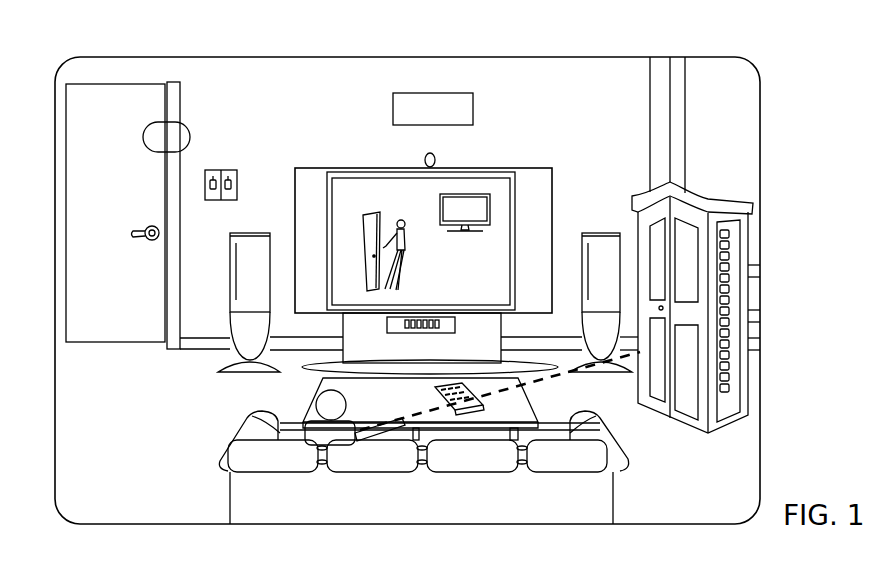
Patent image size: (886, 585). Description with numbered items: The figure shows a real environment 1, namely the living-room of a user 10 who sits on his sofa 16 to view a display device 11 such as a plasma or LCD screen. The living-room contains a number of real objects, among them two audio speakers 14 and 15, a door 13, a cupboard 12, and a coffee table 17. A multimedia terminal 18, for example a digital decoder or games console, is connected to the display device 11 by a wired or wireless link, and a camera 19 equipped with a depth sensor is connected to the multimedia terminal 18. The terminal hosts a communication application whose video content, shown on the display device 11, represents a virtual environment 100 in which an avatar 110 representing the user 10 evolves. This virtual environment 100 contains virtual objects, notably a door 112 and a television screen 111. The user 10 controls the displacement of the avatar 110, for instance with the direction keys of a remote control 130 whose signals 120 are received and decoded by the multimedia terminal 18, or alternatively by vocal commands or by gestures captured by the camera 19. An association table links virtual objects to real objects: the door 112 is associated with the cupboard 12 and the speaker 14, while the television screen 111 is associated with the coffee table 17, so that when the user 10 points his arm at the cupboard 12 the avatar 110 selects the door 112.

The real environment 1 is at (229, 74).
The door 13 is at (76, 132).
The audio speaker 15 is at (254, 232).
The audio speaker 14 is at (600, 233).
The display device 11 is at (483, 168).
The virtual environment 100 is at (401, 188).
The door 112 is at (371, 215).
The avatar 110 is at (403, 269).
The television screen 111 is at (490, 204).
The camera 19 is at (437, 160).
The multimedia terminal 18 is at (458, 324).
The coffee table 17 is at (317, 380).
The remote control 130 is at (434, 393).
The signal path 120 is at (562, 378).
The user 10 is at (250, 431).
The sofa 16 is at (612, 494).
The cupboard 12 is at (721, 434).